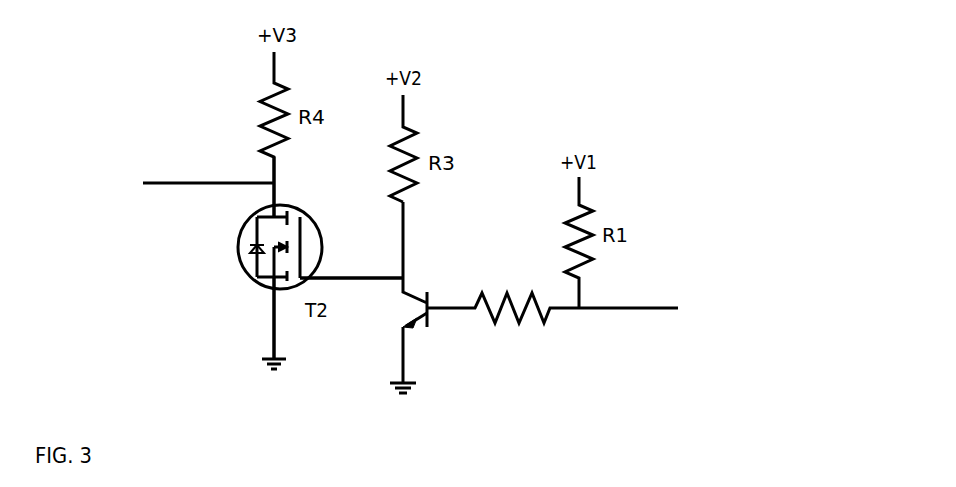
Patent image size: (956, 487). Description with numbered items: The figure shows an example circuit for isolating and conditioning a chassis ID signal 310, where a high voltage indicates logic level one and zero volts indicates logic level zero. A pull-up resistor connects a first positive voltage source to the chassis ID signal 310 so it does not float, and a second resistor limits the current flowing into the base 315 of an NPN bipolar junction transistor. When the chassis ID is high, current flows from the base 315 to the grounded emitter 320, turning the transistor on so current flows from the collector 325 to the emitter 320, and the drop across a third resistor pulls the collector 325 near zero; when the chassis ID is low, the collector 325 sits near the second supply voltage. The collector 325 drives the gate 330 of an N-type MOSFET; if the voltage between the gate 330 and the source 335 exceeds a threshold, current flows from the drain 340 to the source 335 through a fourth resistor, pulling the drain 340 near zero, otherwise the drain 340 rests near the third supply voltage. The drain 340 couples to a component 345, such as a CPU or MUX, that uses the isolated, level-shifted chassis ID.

The chassis ID signal 310 is at (788, 293).
The base 315 is at (442, 302).
The emitter 320 is at (398, 326).
The collector 325 is at (412, 268).
The gate 330 is at (357, 272).
The source 335 is at (247, 313).
The drain 340 is at (260, 173).
The component 345 is at (145, 166).